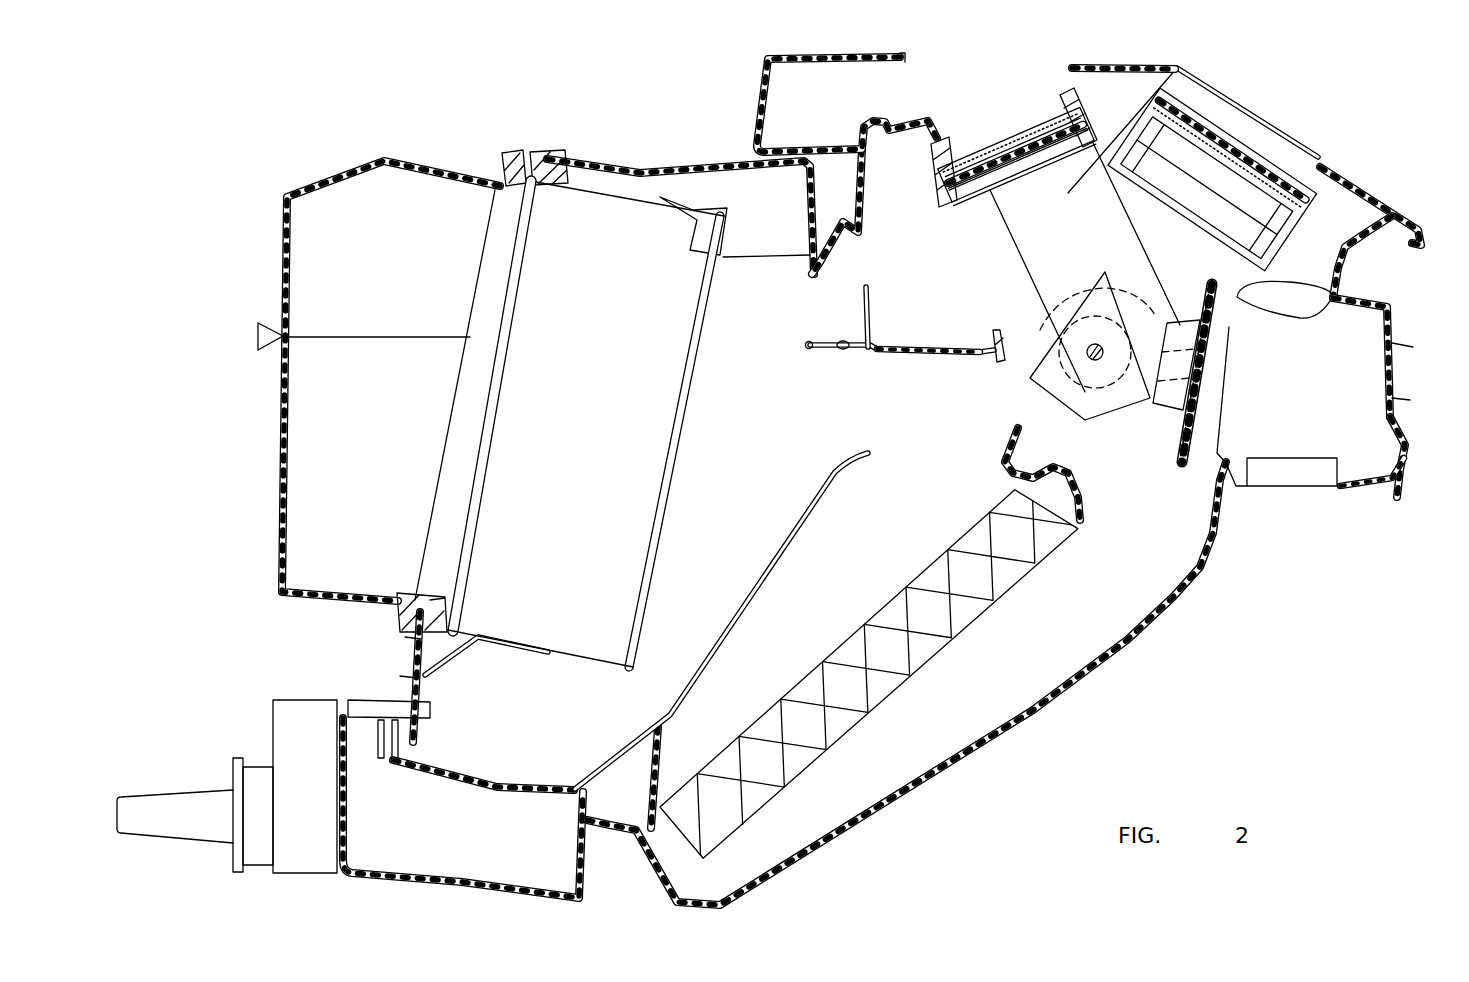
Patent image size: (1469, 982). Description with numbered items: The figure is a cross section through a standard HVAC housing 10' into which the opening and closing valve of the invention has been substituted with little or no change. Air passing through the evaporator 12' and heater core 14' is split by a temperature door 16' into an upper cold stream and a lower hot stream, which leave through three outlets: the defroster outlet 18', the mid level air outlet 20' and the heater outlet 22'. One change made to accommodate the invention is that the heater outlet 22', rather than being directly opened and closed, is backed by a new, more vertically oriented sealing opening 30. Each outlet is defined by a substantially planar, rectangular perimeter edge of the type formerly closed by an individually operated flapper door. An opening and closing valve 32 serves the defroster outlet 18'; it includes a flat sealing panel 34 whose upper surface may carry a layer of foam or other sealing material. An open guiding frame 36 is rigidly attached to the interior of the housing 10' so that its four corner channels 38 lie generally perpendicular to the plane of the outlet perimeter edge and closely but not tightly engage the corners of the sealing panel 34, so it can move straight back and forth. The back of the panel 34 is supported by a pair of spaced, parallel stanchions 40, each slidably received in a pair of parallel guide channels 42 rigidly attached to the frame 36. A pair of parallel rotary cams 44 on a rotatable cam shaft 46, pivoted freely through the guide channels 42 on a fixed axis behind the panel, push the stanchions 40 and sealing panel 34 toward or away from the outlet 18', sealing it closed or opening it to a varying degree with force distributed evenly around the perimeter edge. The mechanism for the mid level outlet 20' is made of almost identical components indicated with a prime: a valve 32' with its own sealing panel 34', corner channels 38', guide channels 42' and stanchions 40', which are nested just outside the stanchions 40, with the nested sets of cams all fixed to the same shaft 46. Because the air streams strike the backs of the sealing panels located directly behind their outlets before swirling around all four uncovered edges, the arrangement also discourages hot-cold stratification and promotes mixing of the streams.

The HVAC housing 10' is at (796, 91).
The evaporator 12' is at (586, 424).
The heater core 14' is at (868, 669).
The temperature door 16' is at (906, 320).
The defroster outlet 18' is at (1100, 38).
The mid level air outlet 20' is at (1227, 163).
The heater outlet 22' is at (1310, 440).
The sealing opening 30 is at (1340, 295).
The opening and closing valve 32 is at (1016, 113).
The opening and closing valve 32' is at (1232, 128).
The sealing panel 34 is at (1010, 99).
The sealing panel 34' is at (1239, 117).
The guiding frame 36 is at (955, 206).
The corner channels 38 is at (1009, 114).
The corner channels 38' is at (1400, 257).
The stanchions 40 is at (1017, 194).
The stanchions 40' is at (1207, 131).
The guide channels 42 is at (1085, 212).
The guide channels 42' is at (1206, 151).
The rotary cams 44 is at (1087, 353).
The cam shaft 46 is at (1093, 358).